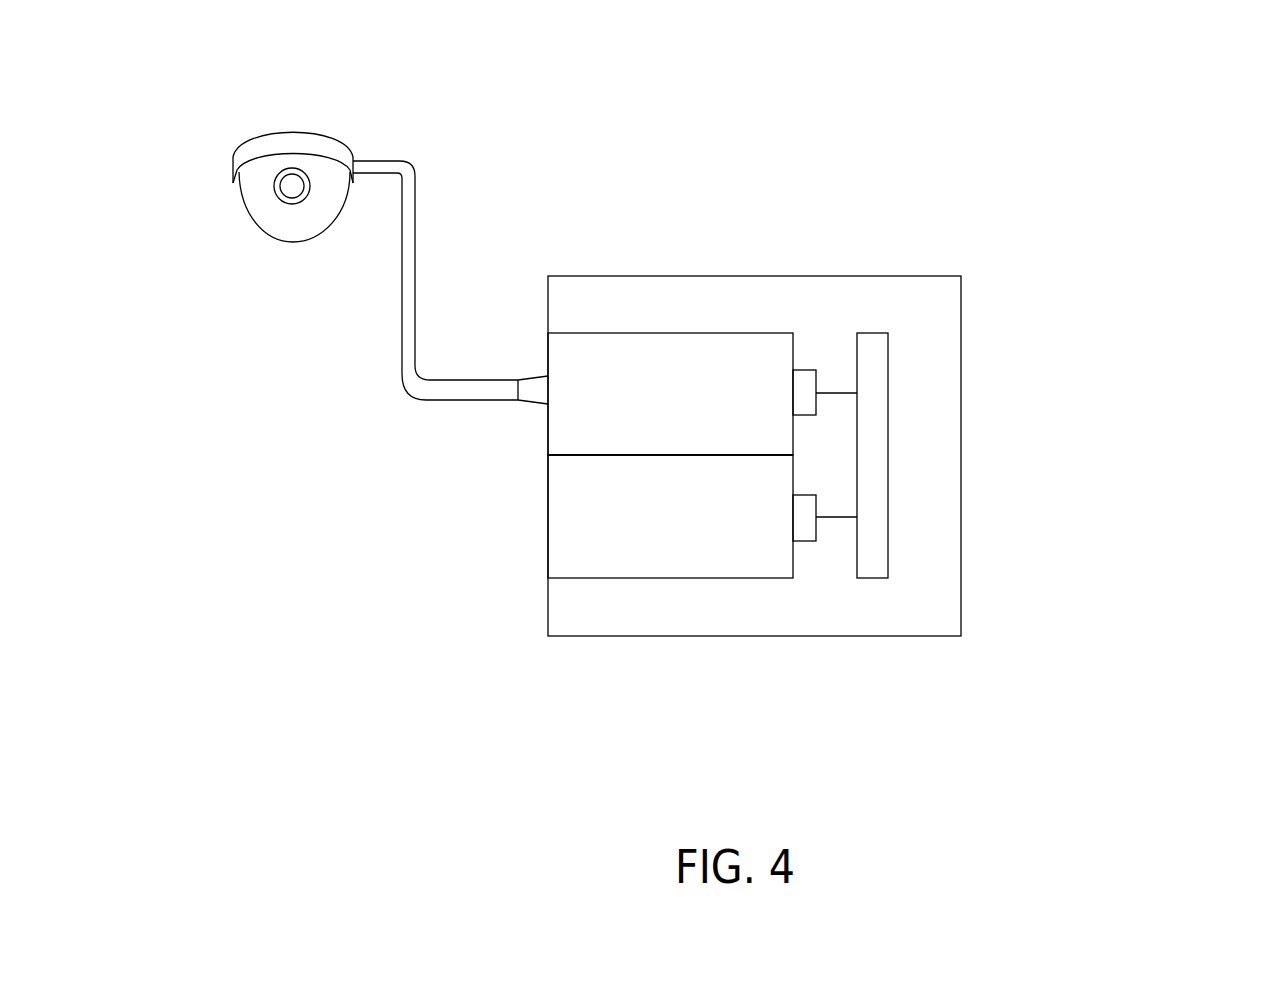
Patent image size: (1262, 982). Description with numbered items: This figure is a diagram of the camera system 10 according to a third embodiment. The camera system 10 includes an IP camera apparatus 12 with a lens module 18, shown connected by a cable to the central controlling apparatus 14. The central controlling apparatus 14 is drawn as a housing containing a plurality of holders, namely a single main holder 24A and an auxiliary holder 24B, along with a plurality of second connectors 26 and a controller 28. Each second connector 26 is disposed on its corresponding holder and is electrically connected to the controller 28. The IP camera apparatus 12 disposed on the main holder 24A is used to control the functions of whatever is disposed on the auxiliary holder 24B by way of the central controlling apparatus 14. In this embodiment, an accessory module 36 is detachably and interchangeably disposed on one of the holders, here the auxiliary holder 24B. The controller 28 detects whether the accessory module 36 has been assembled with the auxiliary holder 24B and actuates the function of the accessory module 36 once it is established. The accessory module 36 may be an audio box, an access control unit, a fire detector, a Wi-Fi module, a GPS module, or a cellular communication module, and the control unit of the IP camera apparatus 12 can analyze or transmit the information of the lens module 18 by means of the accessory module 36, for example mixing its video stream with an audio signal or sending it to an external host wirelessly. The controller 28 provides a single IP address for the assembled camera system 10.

The camera system 10 is at (1118, 110).
The IP camera apparatus 12 is at (626, 387).
The central controlling apparatus 14 is at (920, 285).
The lens module 18 is at (248, 143).
The main holder 24A is at (710, 332).
The auxiliary holder 24B is at (708, 578).
The second connector 26 is at (805, 385).
The controller 28 is at (878, 458).
The accessory module 36 is at (630, 525).